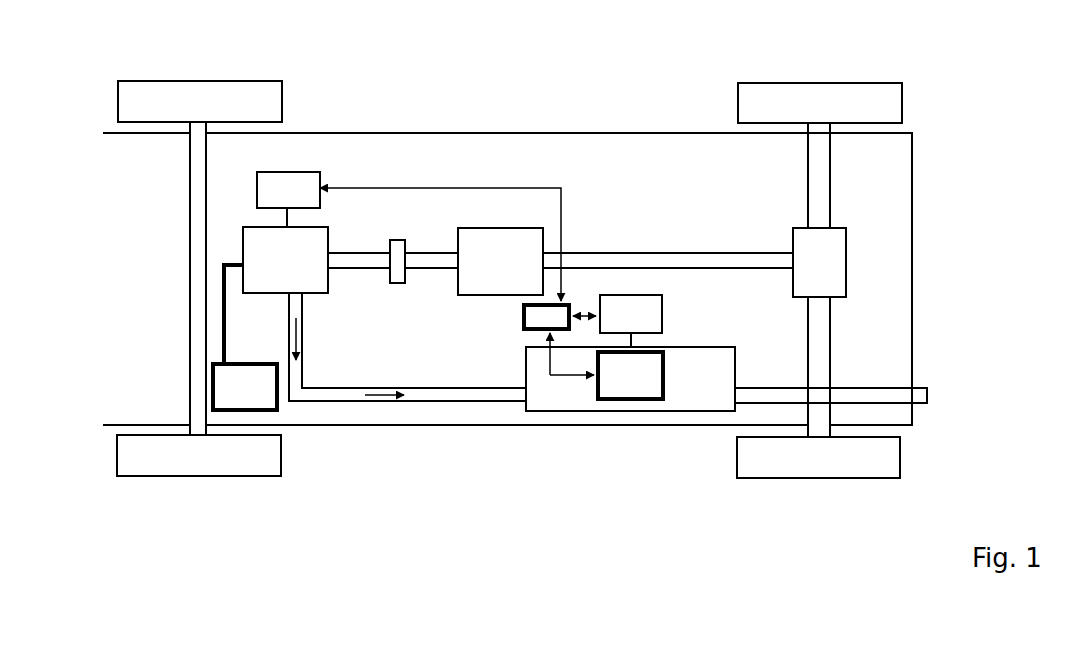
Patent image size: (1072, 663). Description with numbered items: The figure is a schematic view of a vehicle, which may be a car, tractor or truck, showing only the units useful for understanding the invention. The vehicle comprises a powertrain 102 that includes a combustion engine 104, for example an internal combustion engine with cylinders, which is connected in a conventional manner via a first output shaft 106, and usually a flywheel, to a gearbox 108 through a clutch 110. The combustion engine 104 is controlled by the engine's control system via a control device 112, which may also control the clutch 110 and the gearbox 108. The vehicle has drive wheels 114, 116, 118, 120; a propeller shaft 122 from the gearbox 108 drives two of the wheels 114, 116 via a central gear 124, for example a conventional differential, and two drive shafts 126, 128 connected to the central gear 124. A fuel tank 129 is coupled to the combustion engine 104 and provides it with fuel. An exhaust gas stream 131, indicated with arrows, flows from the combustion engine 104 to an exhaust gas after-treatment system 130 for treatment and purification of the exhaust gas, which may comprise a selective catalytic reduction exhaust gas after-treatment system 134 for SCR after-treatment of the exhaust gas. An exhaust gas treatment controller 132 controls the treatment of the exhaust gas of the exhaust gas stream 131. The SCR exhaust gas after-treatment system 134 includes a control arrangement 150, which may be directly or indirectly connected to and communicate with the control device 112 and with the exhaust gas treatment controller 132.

The powertrain 102 is at (441, 456).
The combustion engine 104 is at (268, 288).
The first output shaft 106 is at (345, 252).
The gearbox 108 is at (502, 237).
The clutch 110 is at (397, 283).
The control device 112 is at (290, 196).
The drive wheel 114 is at (903, 95).
The drive wheel 116 is at (897, 460).
The drive wheel 118 is at (235, 93).
The drive wheel 120 is at (247, 470).
The propeller shaft 122 is at (738, 266).
The central gear 124 is at (846, 256).
The drive shaft 126 is at (822, 174).
The drive shaft 128 is at (826, 371).
The fuel tank 129 is at (265, 398).
The exhaust gas after-treatment system 130 is at (643, 410).
The exhaust gas stream 131 is at (295, 325).
The exhaust gas treatment controller 132 is at (630, 320).
The SCR exhaust gas after-treatment system 134 is at (617, 387).
The control arrangement 150 is at (540, 314).